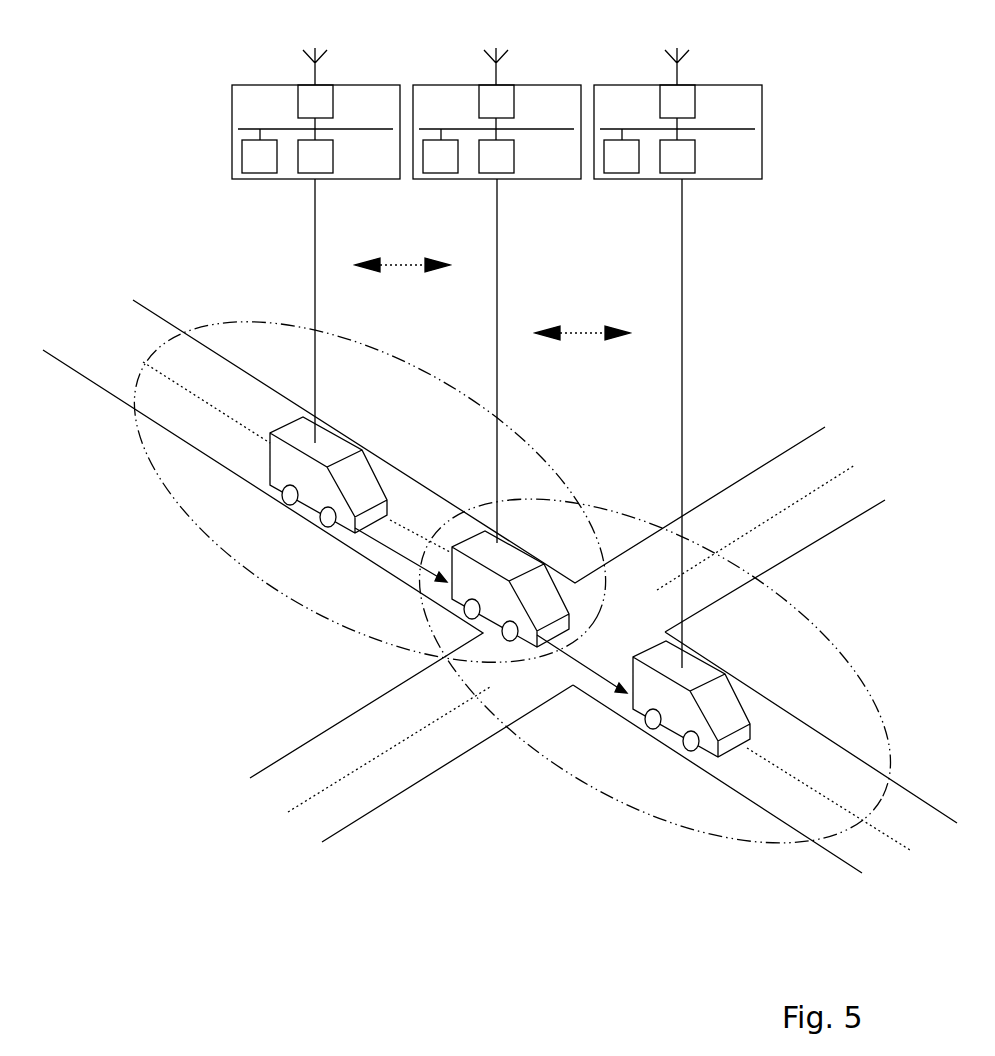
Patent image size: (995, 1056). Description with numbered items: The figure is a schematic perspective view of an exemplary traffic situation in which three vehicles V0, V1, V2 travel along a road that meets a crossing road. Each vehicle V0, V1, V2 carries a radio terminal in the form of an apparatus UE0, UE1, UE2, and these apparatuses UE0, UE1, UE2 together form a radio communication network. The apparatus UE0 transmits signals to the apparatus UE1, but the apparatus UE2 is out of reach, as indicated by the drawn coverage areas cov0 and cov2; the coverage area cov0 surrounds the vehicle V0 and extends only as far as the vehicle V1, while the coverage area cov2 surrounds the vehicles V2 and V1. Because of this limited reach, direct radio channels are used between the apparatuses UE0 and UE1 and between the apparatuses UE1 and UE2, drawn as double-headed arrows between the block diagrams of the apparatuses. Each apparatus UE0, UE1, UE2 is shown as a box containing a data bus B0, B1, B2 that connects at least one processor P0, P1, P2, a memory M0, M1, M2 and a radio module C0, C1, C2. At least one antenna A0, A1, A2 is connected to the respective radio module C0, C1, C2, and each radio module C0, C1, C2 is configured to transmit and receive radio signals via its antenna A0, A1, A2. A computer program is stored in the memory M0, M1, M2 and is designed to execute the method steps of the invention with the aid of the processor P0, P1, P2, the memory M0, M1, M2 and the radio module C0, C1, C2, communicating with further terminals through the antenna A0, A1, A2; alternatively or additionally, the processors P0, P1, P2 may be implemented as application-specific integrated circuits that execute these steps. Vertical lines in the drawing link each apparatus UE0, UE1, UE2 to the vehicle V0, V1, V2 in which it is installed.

The apparatus UE2 is at (296, 111).
The apparatus UE1 is at (477, 111).
The apparatus UE0 is at (678, 108).
The antenna A2 is at (312, 80).
The antenna A1 is at (493, 80).
The antenna A0 is at (674, 80).
The data bus B2 is at (353, 128).
The data bus B1 is at (534, 128).
The data bus B0 is at (710, 128).
The radio module C2 is at (329, 112).
The radio module C1 is at (510, 112).
The radio module C0 is at (691, 112).
The memory M2 is at (275, 167).
The memory M1 is at (456, 167).
The memory M0 is at (637, 167).
The processor P2 is at (329, 167).
The processor P1 is at (510, 167).
The processor P0 is at (691, 167).
The vehicle V2 is at (300, 436).
The vehicle V1 is at (482, 540).
The vehicle V0 is at (673, 730).
The coverage area cov2 is at (369, 491).
The coverage area cov0 is at (655, 671).